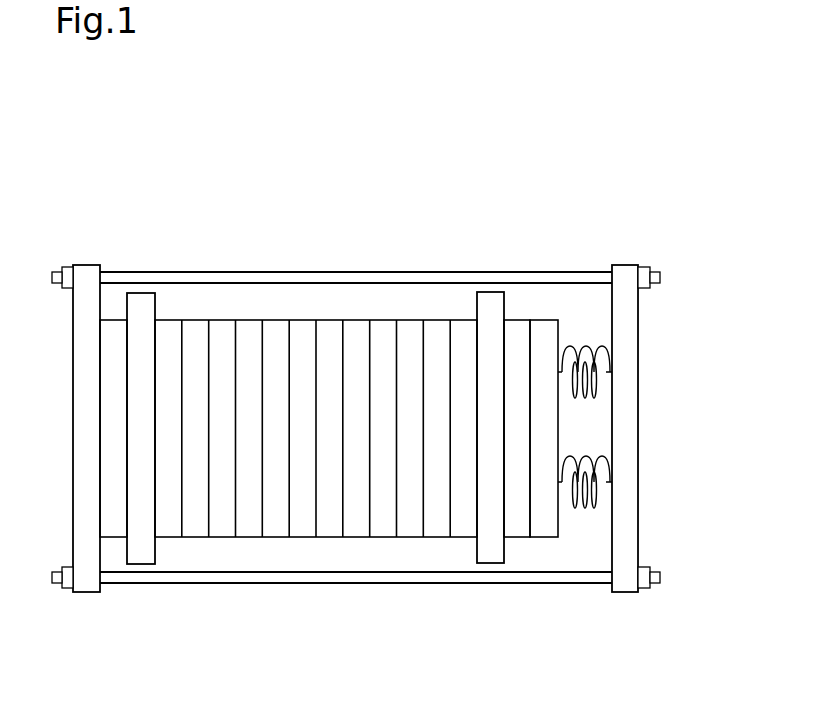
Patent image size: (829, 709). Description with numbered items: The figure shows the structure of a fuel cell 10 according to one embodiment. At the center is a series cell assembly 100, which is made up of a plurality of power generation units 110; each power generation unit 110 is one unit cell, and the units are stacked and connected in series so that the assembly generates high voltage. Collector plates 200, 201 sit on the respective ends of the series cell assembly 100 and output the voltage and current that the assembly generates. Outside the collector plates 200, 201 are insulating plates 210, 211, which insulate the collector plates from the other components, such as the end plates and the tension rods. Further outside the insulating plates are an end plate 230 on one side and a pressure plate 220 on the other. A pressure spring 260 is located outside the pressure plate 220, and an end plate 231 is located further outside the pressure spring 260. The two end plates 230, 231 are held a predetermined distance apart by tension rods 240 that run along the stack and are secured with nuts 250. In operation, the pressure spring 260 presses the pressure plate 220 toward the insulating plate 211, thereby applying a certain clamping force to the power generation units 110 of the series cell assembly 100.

The fuel cell 10 is at (645, 128).
The series cell assembly 100 is at (478, 598).
The power generation unit 110 is at (175, 318).
The collector plate 200 is at (141, 292).
The collector plate 201 is at (497, 291).
The insulating plate 210 is at (112, 318).
The insulating plate 211 is at (519, 318).
The pressure plate 220 is at (552, 318).
The end plate 230 is at (88, 264).
The end plate 231 is at (622, 264).
The tension rod 240 is at (376, 272).
The nut 250 is at (660, 270).
The pressure spring 260 is at (586, 345).